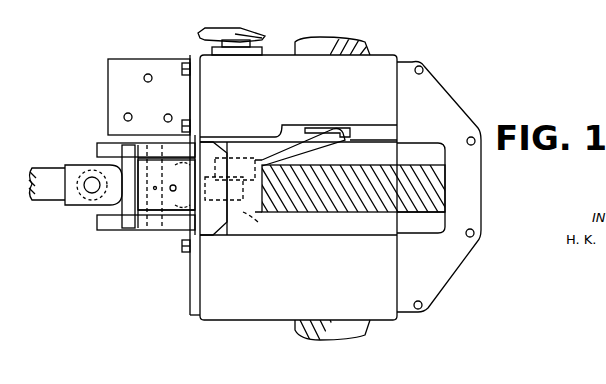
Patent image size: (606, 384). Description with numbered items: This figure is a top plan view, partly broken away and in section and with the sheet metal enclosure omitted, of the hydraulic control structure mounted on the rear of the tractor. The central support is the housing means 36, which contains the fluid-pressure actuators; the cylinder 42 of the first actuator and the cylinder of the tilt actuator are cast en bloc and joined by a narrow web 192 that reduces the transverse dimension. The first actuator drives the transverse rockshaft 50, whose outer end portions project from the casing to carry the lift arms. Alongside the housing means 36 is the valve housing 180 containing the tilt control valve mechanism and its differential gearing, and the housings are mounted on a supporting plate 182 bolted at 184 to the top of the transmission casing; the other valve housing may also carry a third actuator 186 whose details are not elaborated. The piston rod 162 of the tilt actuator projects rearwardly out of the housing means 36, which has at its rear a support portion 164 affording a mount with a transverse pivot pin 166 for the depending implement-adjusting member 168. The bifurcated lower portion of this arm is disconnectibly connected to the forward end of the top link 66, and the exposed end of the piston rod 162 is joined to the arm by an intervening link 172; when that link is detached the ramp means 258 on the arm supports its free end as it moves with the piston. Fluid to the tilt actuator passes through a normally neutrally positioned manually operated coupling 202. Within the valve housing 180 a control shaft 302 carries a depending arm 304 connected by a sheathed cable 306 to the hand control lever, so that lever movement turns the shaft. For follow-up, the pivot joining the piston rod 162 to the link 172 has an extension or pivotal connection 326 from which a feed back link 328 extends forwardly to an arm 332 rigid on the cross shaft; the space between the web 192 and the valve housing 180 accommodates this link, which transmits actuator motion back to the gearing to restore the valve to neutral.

The housing means 36 is at (445, 180).
The cylinder 42 is at (428, 228).
The rockshaft 50 is at (360, 38).
The top link 66 is at (45, 195).
The piston rod 162 is at (258, 218).
The support portion 164 is at (138, 224).
The transverse pivot pin 166 is at (120, 147).
The implement-adjusting member 168 is at (106, 238).
The link 172 is at (183, 210).
The valve housing 180 is at (400, 58).
The supporting plate 182 is at (448, 100).
The bolts 184 is at (425, 70).
The third actuator 186 is at (240, 312).
The web 192 is at (412, 145).
The manually operated coupling 202 is at (113, 82).
The ramp means 258 is at (128, 200).
The control shaft 302 is at (238, 47).
The depending arm 304 is at (230, 30).
The sheathed cable 306 is at (265, 27).
The pivotal connection 326 is at (222, 140).
The feed back link 328 is at (290, 136).
The arm 332 is at (335, 128).